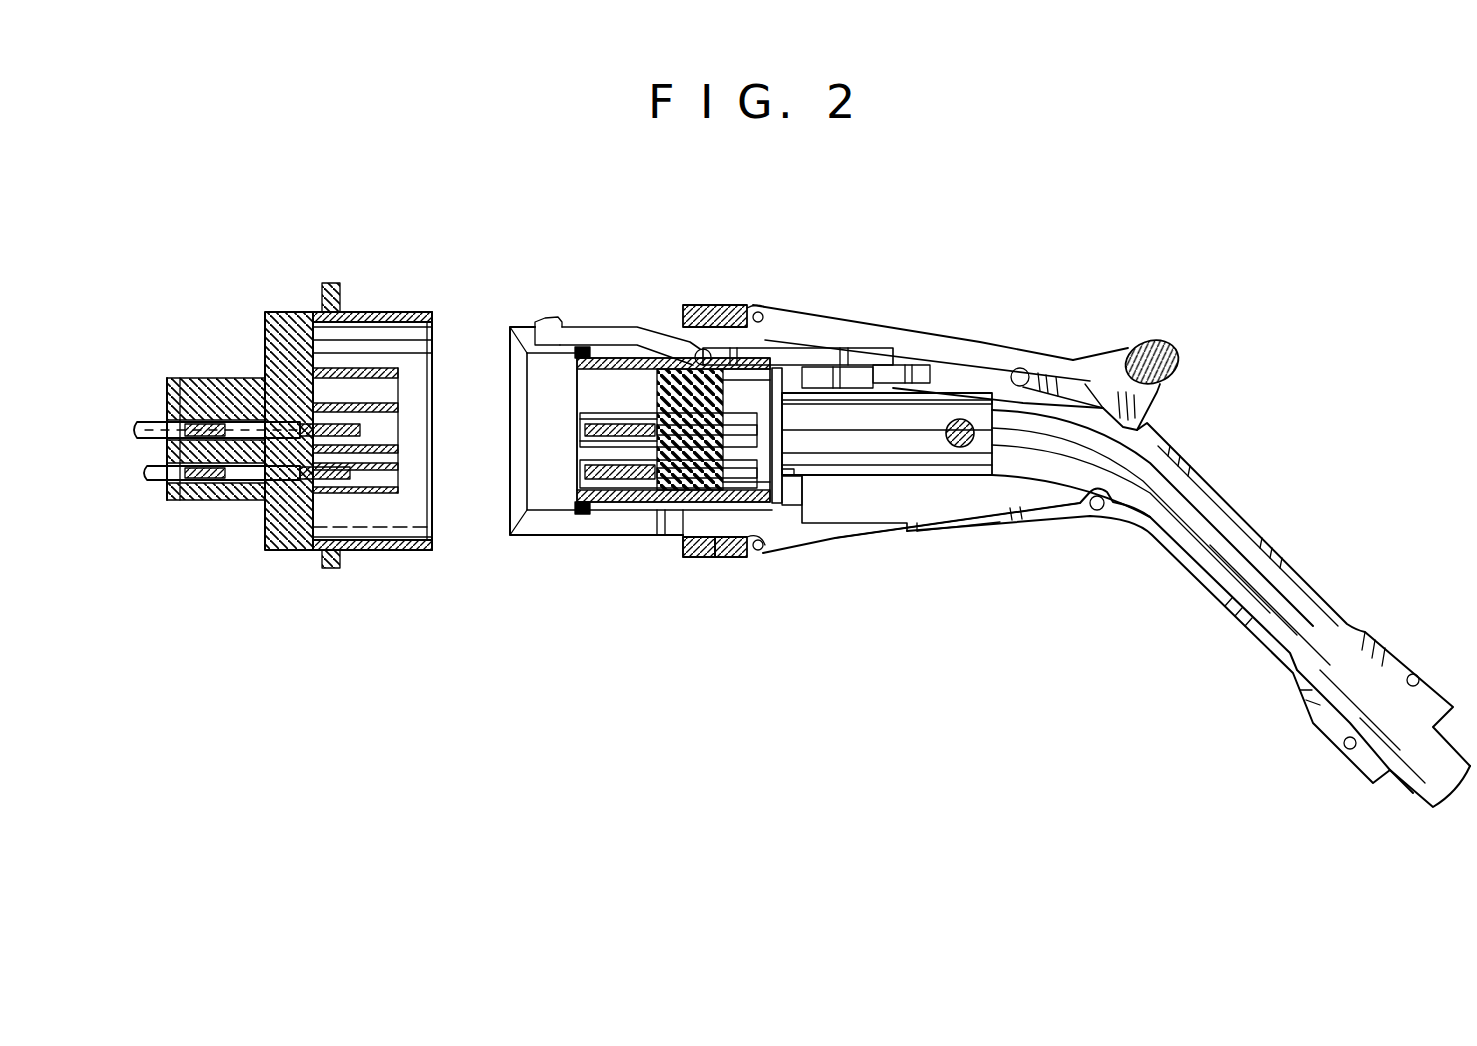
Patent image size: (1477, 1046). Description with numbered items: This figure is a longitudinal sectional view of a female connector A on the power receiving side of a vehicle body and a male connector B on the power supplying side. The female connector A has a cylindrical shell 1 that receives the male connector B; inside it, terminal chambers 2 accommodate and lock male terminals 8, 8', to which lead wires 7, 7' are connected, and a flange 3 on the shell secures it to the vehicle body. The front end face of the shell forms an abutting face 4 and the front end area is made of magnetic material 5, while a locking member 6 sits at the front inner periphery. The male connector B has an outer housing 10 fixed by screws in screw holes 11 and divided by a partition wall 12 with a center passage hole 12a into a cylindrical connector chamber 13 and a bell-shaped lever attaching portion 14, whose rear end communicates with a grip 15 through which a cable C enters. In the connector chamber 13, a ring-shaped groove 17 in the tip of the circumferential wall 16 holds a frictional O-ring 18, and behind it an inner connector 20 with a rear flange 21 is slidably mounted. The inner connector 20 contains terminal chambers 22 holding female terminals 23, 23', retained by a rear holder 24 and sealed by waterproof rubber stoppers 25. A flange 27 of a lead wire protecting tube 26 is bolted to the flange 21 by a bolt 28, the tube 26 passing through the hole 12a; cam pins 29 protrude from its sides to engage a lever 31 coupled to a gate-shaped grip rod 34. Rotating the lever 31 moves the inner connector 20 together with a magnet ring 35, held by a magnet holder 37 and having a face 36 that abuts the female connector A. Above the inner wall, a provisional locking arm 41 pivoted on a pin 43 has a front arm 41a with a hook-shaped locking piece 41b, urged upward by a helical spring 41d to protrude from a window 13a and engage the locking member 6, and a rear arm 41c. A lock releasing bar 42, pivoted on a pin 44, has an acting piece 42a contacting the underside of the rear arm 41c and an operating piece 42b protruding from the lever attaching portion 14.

The cylindrical shell 1 is at (366, 553).
The terminal chambers 2 is at (398, 445).
The flange 3 is at (322, 572).
The abutting face 4 is at (437, 550).
The magnetic material 5 is at (408, 552).
The locking member 6 is at (380, 315).
The lead wire 7 is at (210, 386).
The lead wire 7' is at (217, 516).
The male terminal 8 is at (382, 417).
The male terminal 8' is at (384, 487).
The outer housing 10 is at (878, 545).
The screw holes 11 is at (757, 556).
The partition wall 12 is at (805, 478).
The center passage hole 12a is at (796, 476).
The connector chamber 13 is at (540, 488).
The window 13a is at (536, 322).
The lever attaching portion 14 is at (1140, 418).
The grip 15 is at (1250, 512).
The circumferential wall 16 is at (645, 525).
The ring-shaped groove 17 is at (575, 507).
The O-ring 18 is at (585, 515).
The inner connector 20 is at (615, 505).
The flange 21 is at (766, 510).
The terminal chambers 22 is at (605, 413).
The female terminal 23 is at (592, 414).
The female terminal 23' is at (641, 461).
The rear holder 24 is at (795, 431).
The waterproof rubber stopper 25 is at (665, 400).
The lead wire protecting tube 26 is at (913, 462).
The flange 27 is at (795, 406).
The bolt 28 is at (800, 492).
The cam pins 29 is at (968, 447).
The lever 31 is at (1100, 352).
The grip rod 34 is at (1180, 350).
The magnet ring 35 is at (690, 560).
The abutting face 36 is at (680, 548).
The magnet holder 37 is at (722, 560).
The provisional locking arm 41 is at (790, 340).
The front arm 41a is at (624, 336).
The locking piece 41b is at (540, 322).
The rear arm 41c is at (850, 350).
The helical spring 41d is at (740, 320).
The lock releasing bar 42 is at (940, 360).
The acting piece 42a is at (893, 378).
The operating piece 42b is at (1070, 388).
The pin 43 is at (712, 306).
The pin 44 is at (1012, 369).
The female connector A is at (276, 292).
The male connector B is at (918, 308).
The cable C is at (1405, 785).